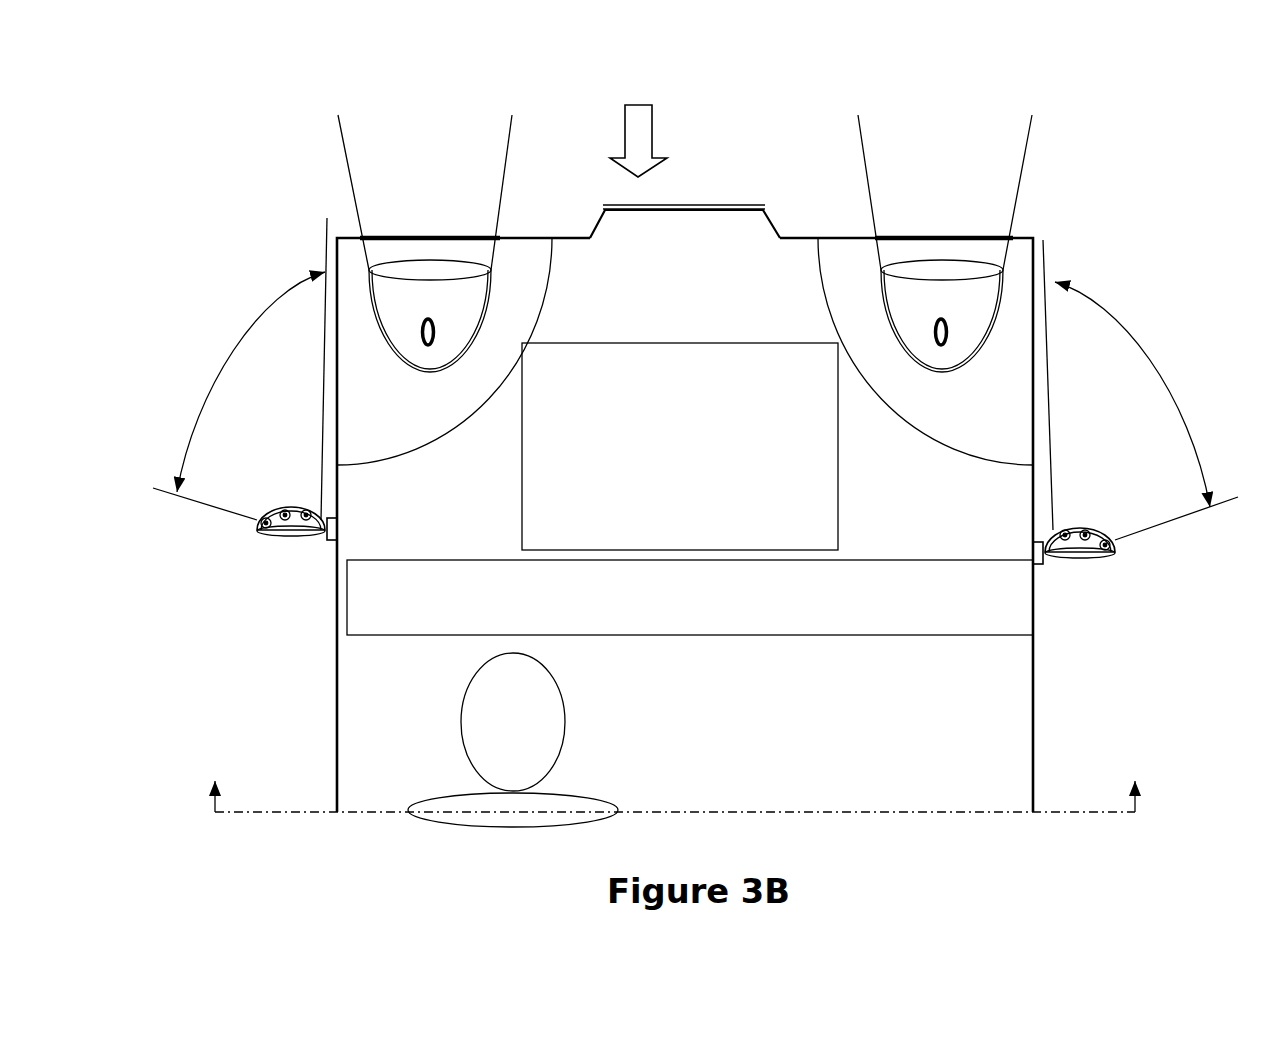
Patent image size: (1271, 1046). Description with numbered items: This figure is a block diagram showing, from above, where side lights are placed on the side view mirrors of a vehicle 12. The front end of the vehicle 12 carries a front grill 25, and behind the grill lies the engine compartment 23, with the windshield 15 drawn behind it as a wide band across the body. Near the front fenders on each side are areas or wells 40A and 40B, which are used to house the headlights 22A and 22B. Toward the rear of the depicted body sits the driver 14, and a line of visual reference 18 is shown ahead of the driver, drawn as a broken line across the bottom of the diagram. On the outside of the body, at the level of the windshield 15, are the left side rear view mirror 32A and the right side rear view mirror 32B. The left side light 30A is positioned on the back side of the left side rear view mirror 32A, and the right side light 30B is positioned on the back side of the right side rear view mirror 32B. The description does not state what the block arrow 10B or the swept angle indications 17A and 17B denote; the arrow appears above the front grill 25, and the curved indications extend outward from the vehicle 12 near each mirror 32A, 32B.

The forward travel direction arrow 10B is at (659, 137).
The vehicle 12 is at (335, 678).
The driver 14 is at (513, 740).
The windshield 15 is at (690, 597).
The left sensor field of view angle 17A is at (239, 396).
The right sensor field of view angle 17B is at (1146, 411).
The line of visual reference 18 is at (920, 800).
The headlight 22A is at (437, 377).
The headlight 22B is at (937, 375).
The engine compartment 23 is at (680, 446).
The front grill 25 is at (685, 228).
The left side light 30A is at (333, 515).
The right side light 30B is at (1037, 540).
The left side rear view mirror 32A is at (263, 543).
The right side rear view mirror 32B is at (1075, 563).
The well 40A is at (542, 277).
The well 40B is at (828, 287).